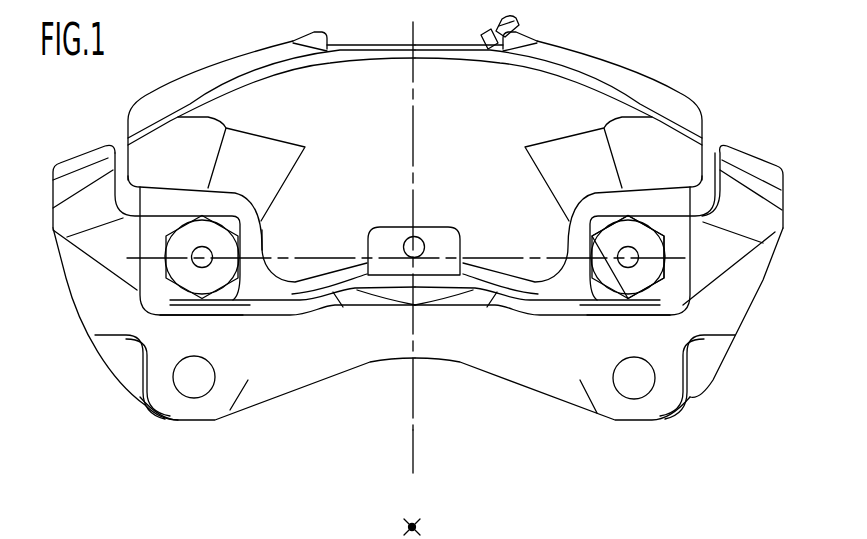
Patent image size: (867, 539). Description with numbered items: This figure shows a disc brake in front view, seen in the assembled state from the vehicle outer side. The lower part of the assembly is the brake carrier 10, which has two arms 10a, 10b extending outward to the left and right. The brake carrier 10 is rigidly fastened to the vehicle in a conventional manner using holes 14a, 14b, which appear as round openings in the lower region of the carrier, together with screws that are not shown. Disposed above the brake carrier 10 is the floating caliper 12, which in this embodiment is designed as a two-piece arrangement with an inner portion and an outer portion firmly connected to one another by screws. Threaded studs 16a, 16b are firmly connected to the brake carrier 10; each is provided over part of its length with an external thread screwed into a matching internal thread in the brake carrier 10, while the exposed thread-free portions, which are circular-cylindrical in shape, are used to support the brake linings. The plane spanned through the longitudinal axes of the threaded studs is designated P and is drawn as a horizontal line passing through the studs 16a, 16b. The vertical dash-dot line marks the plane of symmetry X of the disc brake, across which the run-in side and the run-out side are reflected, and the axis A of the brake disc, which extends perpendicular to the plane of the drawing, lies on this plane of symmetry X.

The brake carrier 10 is at (461, 348).
The arm of brake carrier 10a is at (77, 265).
The arm of brake carrier 10b is at (720, 297).
The floating caliper 12 is at (558, 108).
The hole 14a is at (203, 383).
The hole 14b is at (625, 383).
The threaded stud 16a is at (178, 262).
The threaded stud 16b is at (665, 300).
The plane P is at (295, 250).
The plane of symmetry X is at (413, 435).
The axis of the brake disc A is at (416, 526).